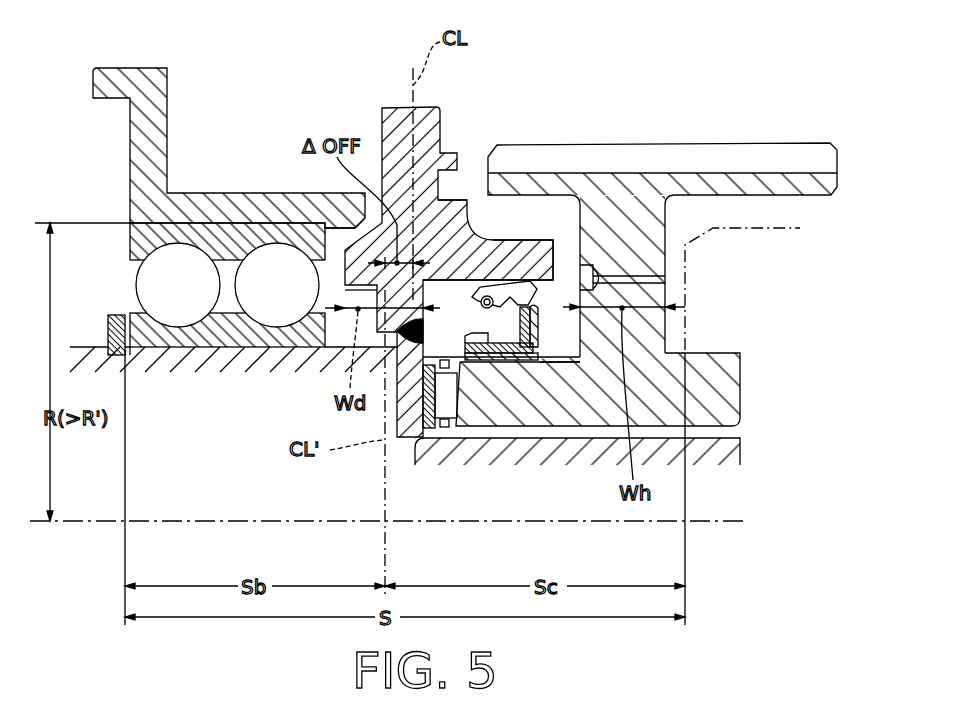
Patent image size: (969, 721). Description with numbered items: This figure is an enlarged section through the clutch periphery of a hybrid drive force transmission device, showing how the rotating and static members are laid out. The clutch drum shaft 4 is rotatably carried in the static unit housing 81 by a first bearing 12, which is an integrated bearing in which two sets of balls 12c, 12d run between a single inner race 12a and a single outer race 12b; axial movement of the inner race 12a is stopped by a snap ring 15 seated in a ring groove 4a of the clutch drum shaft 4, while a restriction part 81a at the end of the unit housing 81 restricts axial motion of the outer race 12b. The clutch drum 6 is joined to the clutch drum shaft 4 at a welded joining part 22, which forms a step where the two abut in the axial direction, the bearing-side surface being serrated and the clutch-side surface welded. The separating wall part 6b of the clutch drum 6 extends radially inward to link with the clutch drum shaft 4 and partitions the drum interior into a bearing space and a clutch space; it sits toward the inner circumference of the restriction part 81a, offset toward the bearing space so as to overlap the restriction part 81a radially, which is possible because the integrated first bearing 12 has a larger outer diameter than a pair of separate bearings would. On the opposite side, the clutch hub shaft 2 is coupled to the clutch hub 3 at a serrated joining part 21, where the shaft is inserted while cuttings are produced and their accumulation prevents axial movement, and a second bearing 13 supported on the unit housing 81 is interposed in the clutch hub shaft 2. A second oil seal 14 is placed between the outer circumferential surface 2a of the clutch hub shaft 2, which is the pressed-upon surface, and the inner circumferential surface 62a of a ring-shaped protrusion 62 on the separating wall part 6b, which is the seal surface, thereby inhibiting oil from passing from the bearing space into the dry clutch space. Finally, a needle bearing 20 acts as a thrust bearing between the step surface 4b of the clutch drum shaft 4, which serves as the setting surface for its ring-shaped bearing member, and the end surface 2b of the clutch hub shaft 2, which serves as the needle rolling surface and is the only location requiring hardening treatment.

The unit housing 81 is at (229, 129).
The restriction part 81a is at (337, 213).
The first bearing 12 is at (201, 262).
The inner race 12a is at (228, 328).
The outer race 12b is at (155, 232).
The balls 12c is at (178, 287).
The balls 12d is at (277, 287).
The snap ring 15 is at (116, 330).
The clutch drum shaft 4 is at (252, 396).
The ring groove 4a is at (126, 352).
The step surface 4b is at (428, 398).
The clutch drum 6 is at (469, 245).
The separating wall part 6b is at (403, 200).
The ring-shaped protrusion 62 is at (493, 248).
The inner circumferential surface 62a is at (525, 285).
The clutch hub 3 is at (655, 133).
The second bearing 13 is at (800, 228).
The serrated joining part 21 is at (622, 278).
The welded joining part 22 is at (424, 328).
The second oil seal 14 is at (535, 312).
The clutch hub shaft 2 is at (606, 350).
The outer circumferential surface 2a is at (551, 362).
The end surface 2b is at (458, 375).
The needle bearing 20 is at (445, 402).